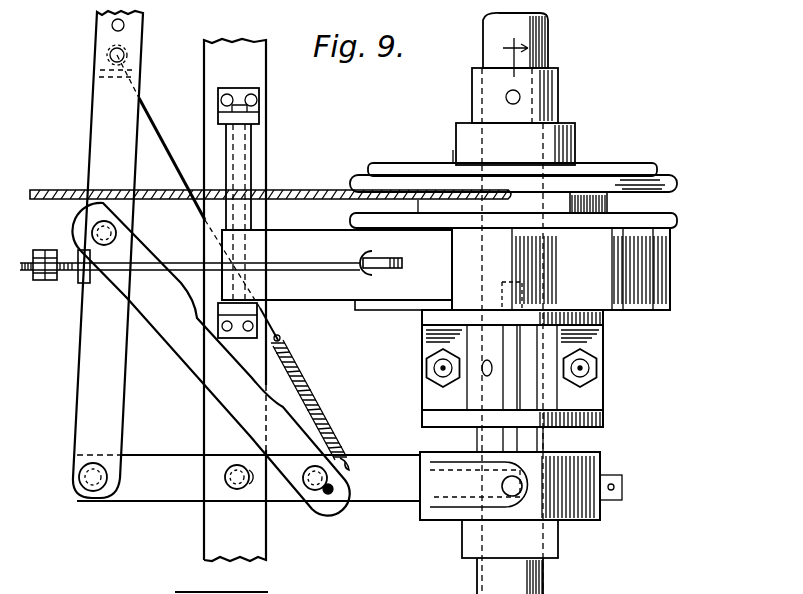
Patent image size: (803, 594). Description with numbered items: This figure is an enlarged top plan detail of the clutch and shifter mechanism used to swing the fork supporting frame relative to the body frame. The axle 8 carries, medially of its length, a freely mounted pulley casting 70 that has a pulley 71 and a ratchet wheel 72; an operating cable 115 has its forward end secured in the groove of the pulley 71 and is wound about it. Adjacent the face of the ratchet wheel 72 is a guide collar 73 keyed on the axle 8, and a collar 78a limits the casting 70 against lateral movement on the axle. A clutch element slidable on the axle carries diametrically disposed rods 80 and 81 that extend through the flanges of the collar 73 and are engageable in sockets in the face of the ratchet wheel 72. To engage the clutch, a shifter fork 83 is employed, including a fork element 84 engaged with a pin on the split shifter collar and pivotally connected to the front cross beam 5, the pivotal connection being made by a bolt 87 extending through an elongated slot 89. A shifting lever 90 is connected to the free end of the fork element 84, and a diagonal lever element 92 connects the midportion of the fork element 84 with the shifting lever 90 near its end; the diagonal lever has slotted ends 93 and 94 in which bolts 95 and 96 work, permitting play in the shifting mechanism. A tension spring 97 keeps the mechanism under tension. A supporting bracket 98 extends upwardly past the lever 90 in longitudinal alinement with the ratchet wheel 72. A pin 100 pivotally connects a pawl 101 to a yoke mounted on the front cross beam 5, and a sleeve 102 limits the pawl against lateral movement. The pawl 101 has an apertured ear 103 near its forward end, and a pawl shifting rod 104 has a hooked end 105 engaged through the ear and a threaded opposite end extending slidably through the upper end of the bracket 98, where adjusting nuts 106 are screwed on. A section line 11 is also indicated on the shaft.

The front cross beam 5 is at (215, 69).
The axle 8 is at (527, 582).
The section line 11 is at (515, 50).
The pulley casting 70 is at (608, 163).
The pulley 71 is at (648, 168).
The ratchet wheel 72 is at (637, 283).
The guide collar 73 is at (588, 396).
The collar 78a is at (547, 113).
The rod 80 is at (510, 388).
The rod 81 is at (512, 486).
The shifter fork 83 is at (153, 509).
The fork element 84 is at (375, 490).
The bolt 87 is at (236, 480).
The elongated slot 89 is at (262, 99).
The shifting lever 90 is at (105, 425).
The diagonal lever element 92 is at (196, 368).
The slotted end 93 is at (85, 226).
The slotted end 94 is at (327, 494).
The bolt 95 is at (118, 233).
The bolt 96 is at (347, 463).
The tension spring 97 is at (308, 392).
The supporting bracket 98 is at (77, 290).
The pin 100 is at (257, 303).
The pawl 101 is at (418, 300).
The sleeve 102 is at (250, 160).
The apertured ear 103 is at (392, 258).
The pawl shifting rod 104 is at (296, 269).
The hooked end 105 is at (358, 260).
The adjusting nuts 106 is at (52, 283).
The operating cable 115 is at (58, 188).